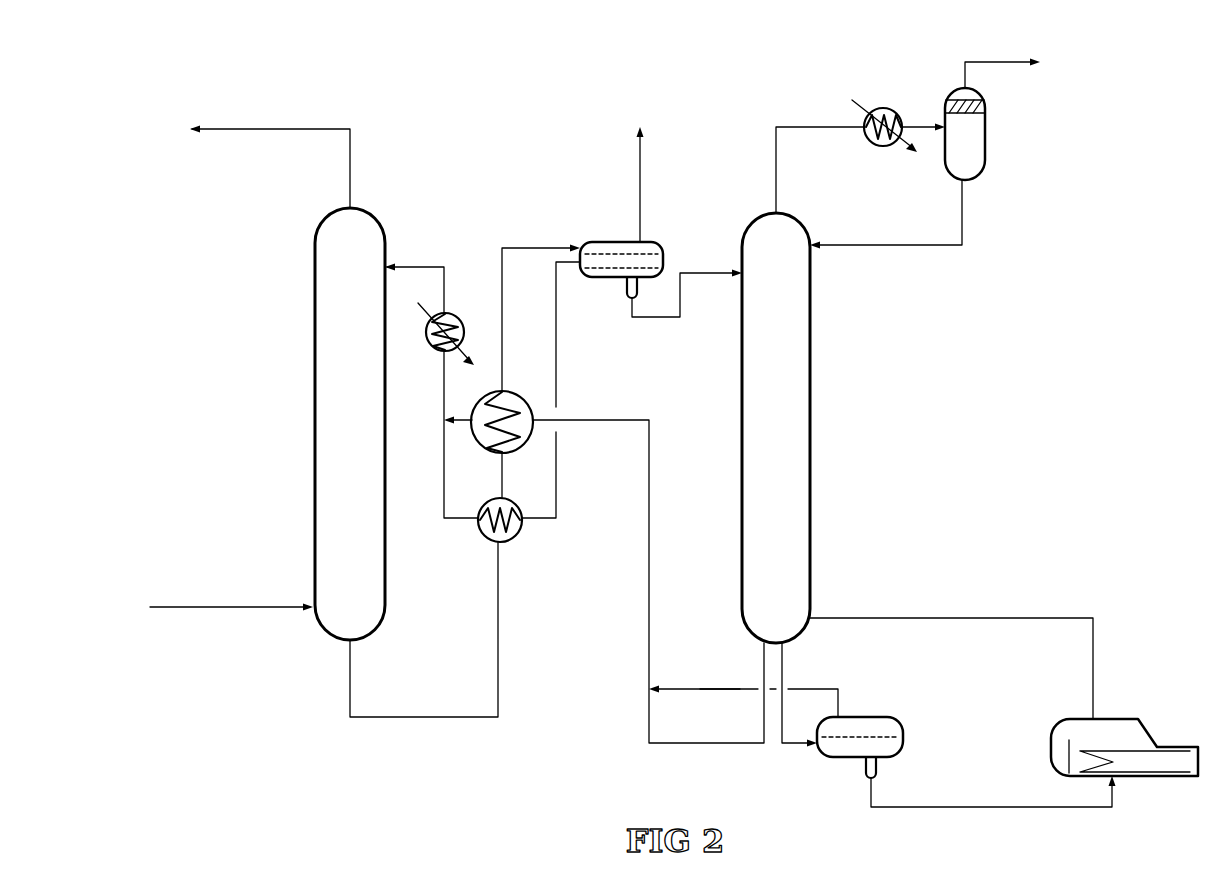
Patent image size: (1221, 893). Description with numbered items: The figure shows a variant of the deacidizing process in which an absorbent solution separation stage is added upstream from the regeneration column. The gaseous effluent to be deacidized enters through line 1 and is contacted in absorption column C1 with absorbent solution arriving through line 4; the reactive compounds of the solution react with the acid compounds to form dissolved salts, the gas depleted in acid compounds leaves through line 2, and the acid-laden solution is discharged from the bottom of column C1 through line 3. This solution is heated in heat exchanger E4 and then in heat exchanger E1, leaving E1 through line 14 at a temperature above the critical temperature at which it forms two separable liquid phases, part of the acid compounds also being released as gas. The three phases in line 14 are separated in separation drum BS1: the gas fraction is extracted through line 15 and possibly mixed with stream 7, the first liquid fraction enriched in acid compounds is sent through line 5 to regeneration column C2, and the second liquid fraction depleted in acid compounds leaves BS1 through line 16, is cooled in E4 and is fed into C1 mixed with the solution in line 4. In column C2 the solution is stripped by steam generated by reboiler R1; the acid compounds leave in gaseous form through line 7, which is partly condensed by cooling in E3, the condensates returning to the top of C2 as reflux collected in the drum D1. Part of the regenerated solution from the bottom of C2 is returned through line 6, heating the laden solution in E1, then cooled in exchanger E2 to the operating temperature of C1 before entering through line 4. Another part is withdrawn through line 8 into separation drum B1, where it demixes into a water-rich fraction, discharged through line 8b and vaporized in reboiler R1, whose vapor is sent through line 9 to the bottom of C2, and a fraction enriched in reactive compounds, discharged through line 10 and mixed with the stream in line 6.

The line 1 is at (218, 605).
The line 2 is at (247, 127).
The line 3 is at (426, 715).
The line 4 is at (420, 265).
The line 5 is at (697, 271).
The line 6 is at (690, 742).
The line 7 is at (810, 127).
The line 8 is at (793, 745).
The line 8b is at (997, 806).
The line 9 is at (860, 615).
The line 10 is at (822, 688).
The line 14 is at (510, 246).
The line 15 is at (638, 153).
The line 16 is at (558, 355).
The absorption column C1 is at (386, 557).
The regeneration column C2 is at (740, 355).
The heat exchanger E1 is at (521, 392).
The exchanger E2 is at (463, 318).
The cooler E3 is at (888, 108).
The heat exchanger E4 is at (517, 496).
The separation drum BS1 is at (600, 240).
The separation drum B1 is at (858, 717).
The reboiler R1 is at (1125, 716).
The reflux drum D1 is at (925, 154).